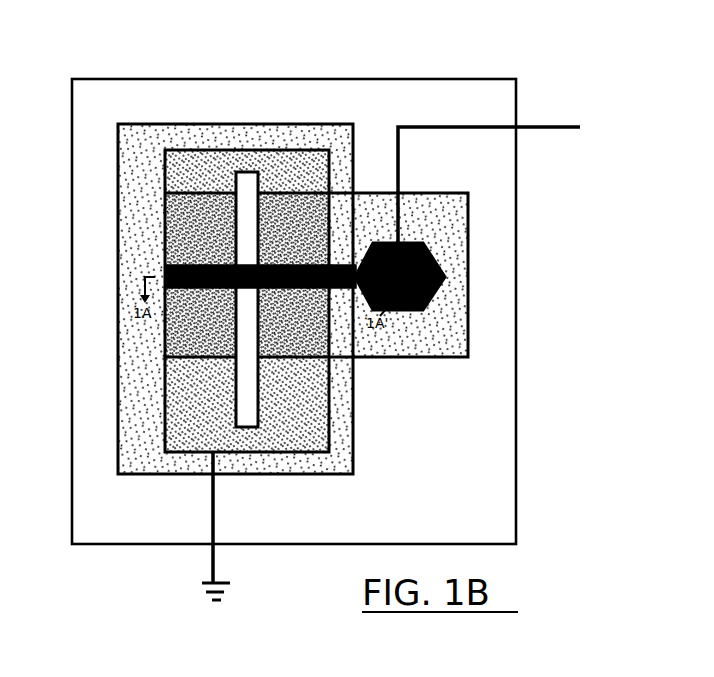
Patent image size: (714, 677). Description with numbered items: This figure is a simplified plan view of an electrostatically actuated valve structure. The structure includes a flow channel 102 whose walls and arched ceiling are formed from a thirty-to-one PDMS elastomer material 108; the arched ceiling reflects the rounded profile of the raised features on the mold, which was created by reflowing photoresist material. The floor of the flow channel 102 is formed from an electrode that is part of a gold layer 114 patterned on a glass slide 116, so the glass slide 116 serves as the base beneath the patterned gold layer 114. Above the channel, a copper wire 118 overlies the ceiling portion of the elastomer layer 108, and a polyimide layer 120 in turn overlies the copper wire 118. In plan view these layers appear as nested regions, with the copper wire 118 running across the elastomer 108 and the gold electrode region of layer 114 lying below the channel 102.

The flow channel 102 is at (245, 182).
The PDMS elastomer material 108 is at (182, 160).
The gold layer 114 is at (136, 143).
The glass slide 116 is at (400, 97).
The copper wire 118 is at (197, 262).
The polyimide layer 120 is at (203, 205).